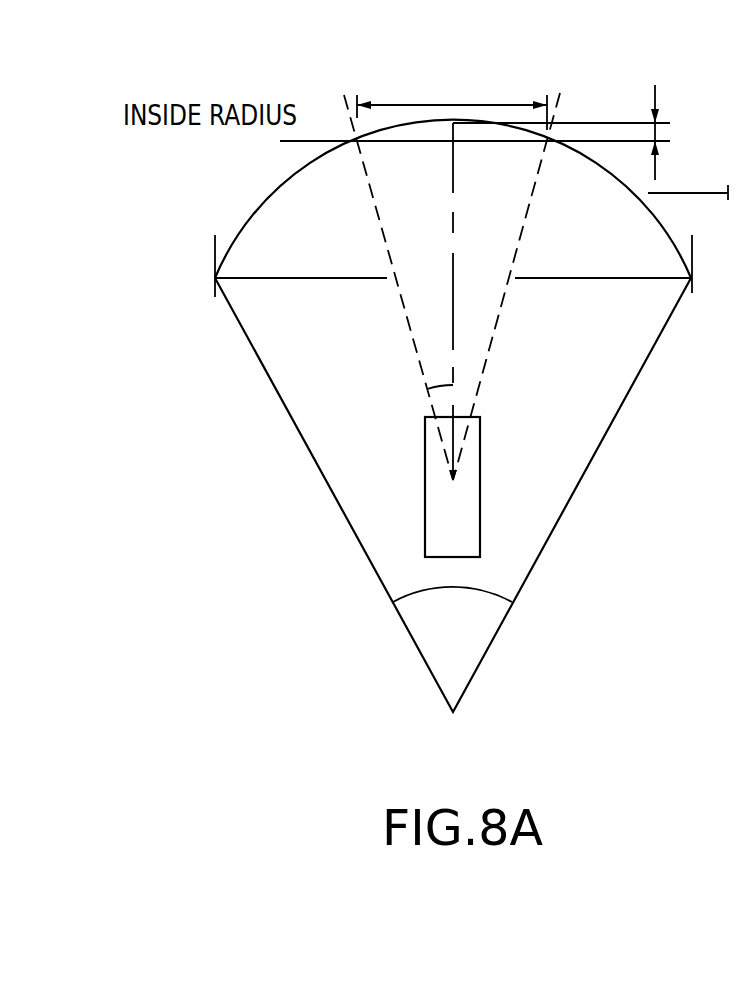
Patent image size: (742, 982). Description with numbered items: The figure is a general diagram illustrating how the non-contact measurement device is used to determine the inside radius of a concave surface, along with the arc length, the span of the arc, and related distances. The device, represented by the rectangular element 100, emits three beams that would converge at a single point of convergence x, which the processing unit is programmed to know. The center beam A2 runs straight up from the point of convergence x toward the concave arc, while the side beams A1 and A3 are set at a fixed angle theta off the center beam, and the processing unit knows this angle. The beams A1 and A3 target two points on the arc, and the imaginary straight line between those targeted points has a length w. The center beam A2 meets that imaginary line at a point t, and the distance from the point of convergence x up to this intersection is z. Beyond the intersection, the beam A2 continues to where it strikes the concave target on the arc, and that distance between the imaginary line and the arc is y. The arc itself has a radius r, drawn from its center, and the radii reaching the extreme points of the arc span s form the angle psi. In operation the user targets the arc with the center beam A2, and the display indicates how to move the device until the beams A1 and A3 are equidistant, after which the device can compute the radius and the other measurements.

The light source / emitter element 100 is at (487, 465).
The total span of arc s is at (613, 300).
The intersection point of beam A2 with line A1-A3 t is at (455, 142).
The distance from intersection to arc target point y is at (657, 132).
The distance of imaginary line between targeted points w is at (452, 103).
The distance from point of convergence to intersection z is at (453, 302).
The radius of arc r is at (441, 505).
The point of convergence of beams x is at (453, 496).
The side beam A1 is at (337, 178).
The center beam A2 is at (429, 178).
The side beam A3 is at (566, 178).
The angle between center beam and side beam theta is at (452, 286).
The angle formed by radii reaching extreme points of arc span psi is at (452, 608).